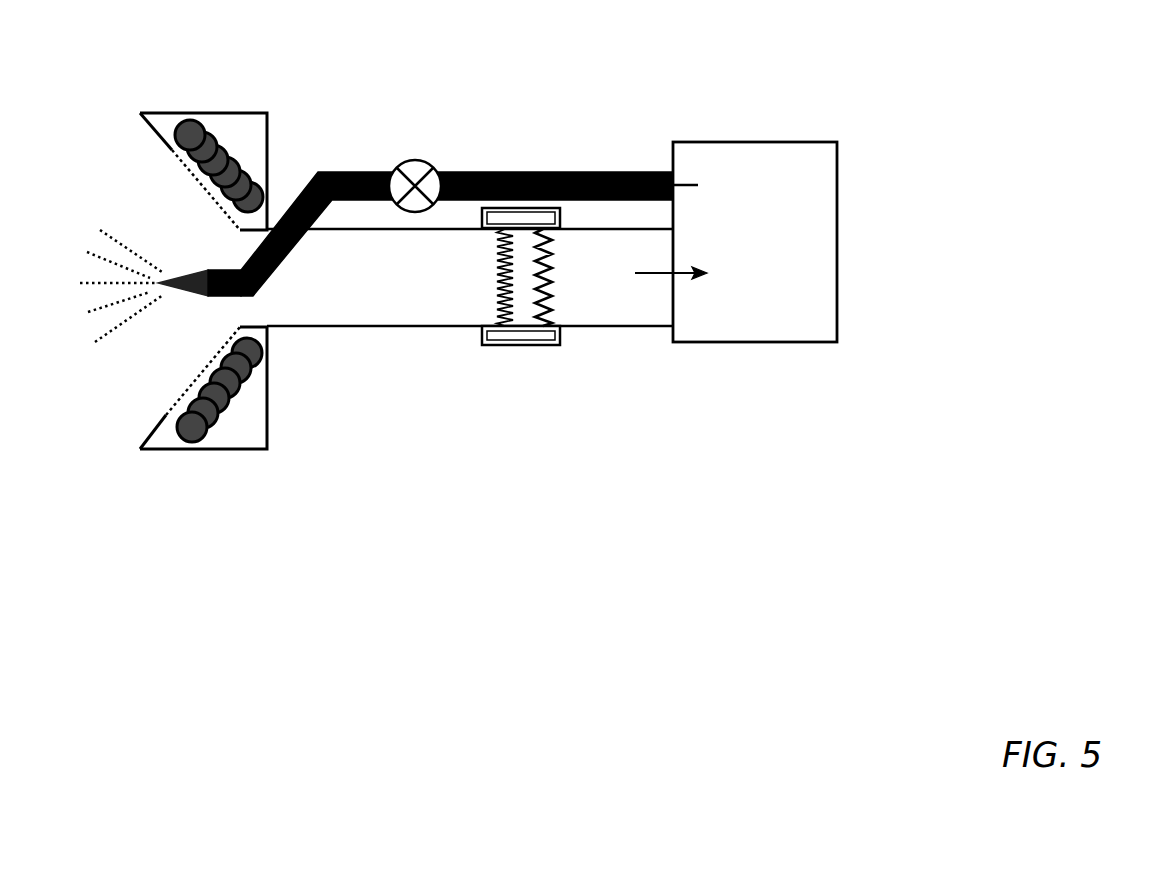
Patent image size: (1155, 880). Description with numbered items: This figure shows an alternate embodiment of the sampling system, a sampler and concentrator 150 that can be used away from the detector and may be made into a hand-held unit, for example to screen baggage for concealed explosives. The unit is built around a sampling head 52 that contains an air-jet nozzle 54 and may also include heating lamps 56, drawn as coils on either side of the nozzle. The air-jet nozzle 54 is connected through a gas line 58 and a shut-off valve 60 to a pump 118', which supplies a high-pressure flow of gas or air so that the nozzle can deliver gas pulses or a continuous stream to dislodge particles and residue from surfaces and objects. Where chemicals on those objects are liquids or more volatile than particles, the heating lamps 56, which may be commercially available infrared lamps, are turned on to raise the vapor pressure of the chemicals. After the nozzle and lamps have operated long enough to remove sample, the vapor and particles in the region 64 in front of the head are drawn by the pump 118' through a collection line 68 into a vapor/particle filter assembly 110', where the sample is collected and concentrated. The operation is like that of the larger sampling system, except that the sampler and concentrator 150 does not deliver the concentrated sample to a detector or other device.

The sampling head 52 is at (197, 452).
The air-jet nozzle 54 is at (172, 257).
The heating lamps 56 is at (263, 362).
The gas line 58 is at (362, 172).
The shut-off valve 60 is at (417, 158).
The region 64 is at (121, 314).
The collection line 68 is at (417, 335).
The vapor/particle filter assembly 110' is at (559, 320).
The pump 118' is at (736, 242).
The sampler and concentrator 150 is at (315, 515).